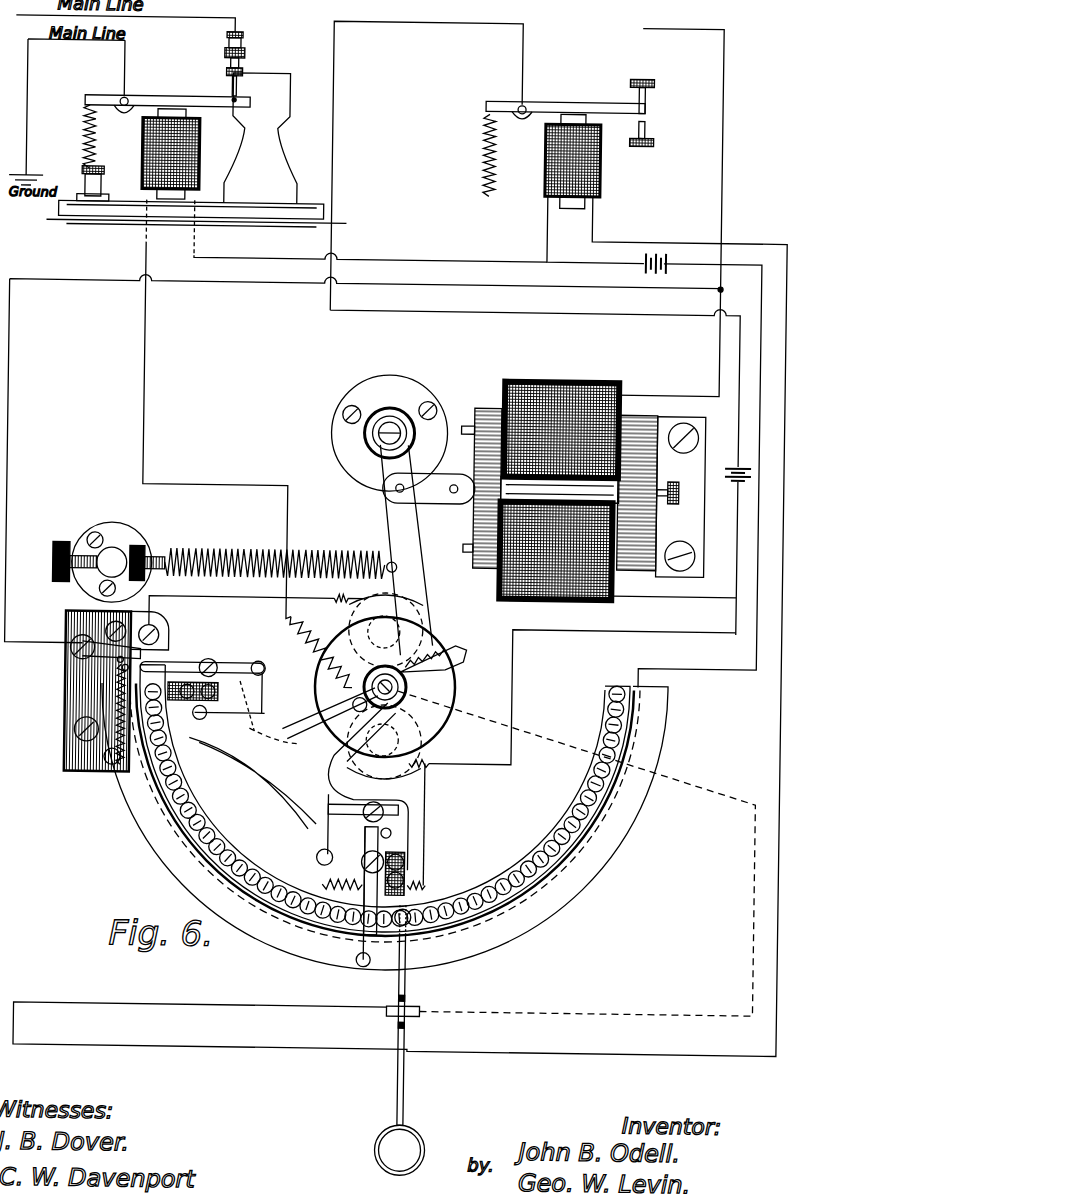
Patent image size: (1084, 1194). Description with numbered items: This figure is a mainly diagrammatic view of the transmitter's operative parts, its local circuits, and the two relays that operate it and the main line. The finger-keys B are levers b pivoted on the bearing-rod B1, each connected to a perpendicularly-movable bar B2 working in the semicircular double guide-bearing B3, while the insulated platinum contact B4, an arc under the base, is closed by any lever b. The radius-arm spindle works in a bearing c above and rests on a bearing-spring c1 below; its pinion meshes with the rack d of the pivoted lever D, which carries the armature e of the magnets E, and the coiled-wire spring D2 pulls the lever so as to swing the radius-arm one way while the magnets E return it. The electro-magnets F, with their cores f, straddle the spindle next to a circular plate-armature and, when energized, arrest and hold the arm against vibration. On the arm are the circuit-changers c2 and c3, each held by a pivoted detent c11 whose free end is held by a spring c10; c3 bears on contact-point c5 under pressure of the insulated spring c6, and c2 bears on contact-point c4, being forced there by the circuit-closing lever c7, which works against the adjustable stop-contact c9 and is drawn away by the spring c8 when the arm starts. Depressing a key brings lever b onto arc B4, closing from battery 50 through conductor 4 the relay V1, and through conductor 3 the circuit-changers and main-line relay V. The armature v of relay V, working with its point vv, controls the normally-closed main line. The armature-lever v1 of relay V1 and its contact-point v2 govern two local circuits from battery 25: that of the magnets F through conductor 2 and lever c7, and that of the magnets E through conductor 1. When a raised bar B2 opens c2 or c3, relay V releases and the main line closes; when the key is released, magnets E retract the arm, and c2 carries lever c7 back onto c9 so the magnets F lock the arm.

The conductor 1 is at (535, 328).
The conductor 2 is at (372, 522).
The conductor 3 is at (338, 524).
The conductor 4 is at (408, 623).
The battery 25 is at (732, 466).
The battery 50 is at (663, 271).
The main-line relay V is at (171, 154).
The armature v is at (166, 96).
The point vv is at (225, 90).
The relay V1 is at (573, 161).
The armature-lever v1 is at (590, 101).
The contact-point v2 is at (648, 112).
The magnets E is at (602, 492).
The armature e is at (478, 528).
The pivoted lever D is at (402, 515).
The coiled-wire spring D2 is at (243, 552).
The electro-magnets F is at (385, 685).
The cores f is at (383, 686).
The rack d is at (445, 655).
The bearing-spring c1 is at (405, 687).
The circuit-changer c3 is at (465, 689).
The bearing c is at (298, 777).
The circuit-changer c2 is at (190, 661).
The contact-point c4 is at (193, 688).
The contact-point c5 is at (376, 865).
The spring c6 is at (358, 896).
The circuit-closing lever c7 is at (105, 648).
The spring c8 is at (97, 691).
The stop-contact c9 is at (160, 646).
The spring c10 is at (263, 768).
The detent c11 is at (320, 735).
The finger-keys B is at (409, 1125).
The lever b is at (409, 974).
The bearing-rod B1 is at (424, 1011).
The perpendicularly-movable bar B2 is at (606, 710).
The semicircular double guide-bearing B3 is at (612, 695).
The insulated platinum contact B4 is at (642, 707).